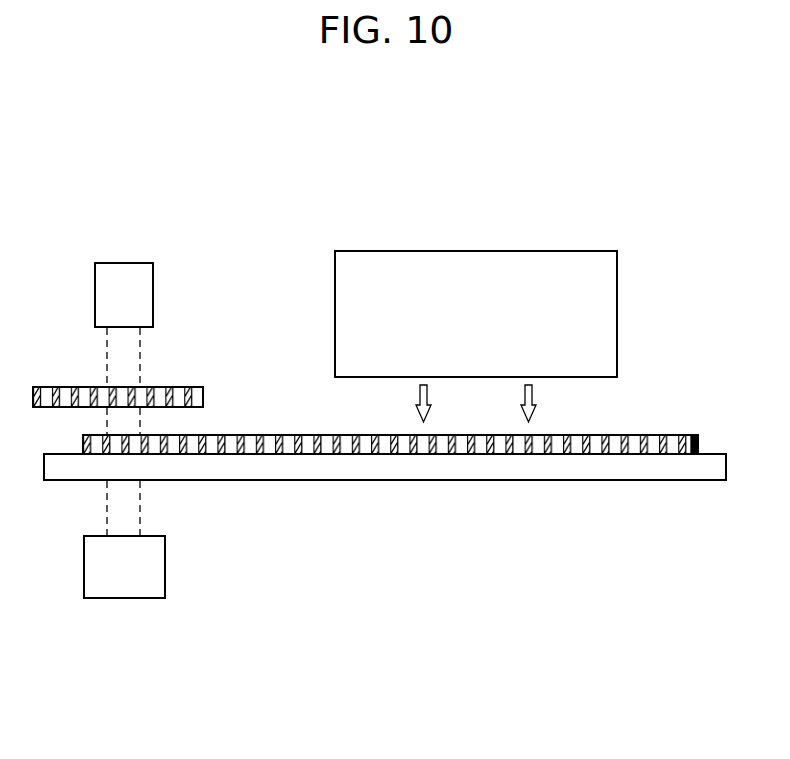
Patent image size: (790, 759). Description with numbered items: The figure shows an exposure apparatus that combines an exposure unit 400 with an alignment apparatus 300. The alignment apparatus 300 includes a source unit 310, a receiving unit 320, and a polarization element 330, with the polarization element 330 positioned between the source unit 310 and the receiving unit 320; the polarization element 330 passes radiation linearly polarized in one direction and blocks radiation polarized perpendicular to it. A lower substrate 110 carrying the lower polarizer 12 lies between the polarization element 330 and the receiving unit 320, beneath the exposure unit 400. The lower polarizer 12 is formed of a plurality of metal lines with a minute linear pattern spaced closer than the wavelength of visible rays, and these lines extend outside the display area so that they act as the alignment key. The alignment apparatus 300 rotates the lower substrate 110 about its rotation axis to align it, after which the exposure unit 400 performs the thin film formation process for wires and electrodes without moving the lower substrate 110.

The lower polarizer 12 is at (662, 435).
The lower substrate 110 is at (535, 481).
The alignment apparatus 300 is at (642, 668).
The source unit 310 is at (154, 296).
The receiving unit 320 is at (166, 567).
The polarization element 330 is at (204, 397).
The exposure unit 400 is at (571, 250).